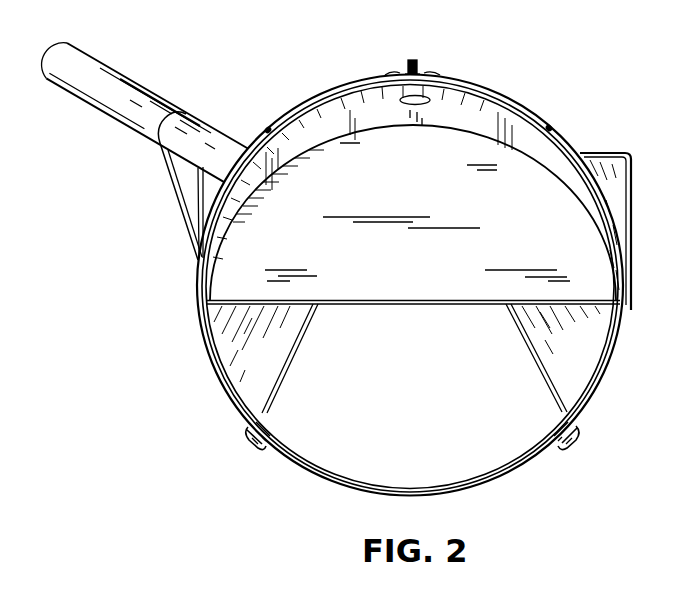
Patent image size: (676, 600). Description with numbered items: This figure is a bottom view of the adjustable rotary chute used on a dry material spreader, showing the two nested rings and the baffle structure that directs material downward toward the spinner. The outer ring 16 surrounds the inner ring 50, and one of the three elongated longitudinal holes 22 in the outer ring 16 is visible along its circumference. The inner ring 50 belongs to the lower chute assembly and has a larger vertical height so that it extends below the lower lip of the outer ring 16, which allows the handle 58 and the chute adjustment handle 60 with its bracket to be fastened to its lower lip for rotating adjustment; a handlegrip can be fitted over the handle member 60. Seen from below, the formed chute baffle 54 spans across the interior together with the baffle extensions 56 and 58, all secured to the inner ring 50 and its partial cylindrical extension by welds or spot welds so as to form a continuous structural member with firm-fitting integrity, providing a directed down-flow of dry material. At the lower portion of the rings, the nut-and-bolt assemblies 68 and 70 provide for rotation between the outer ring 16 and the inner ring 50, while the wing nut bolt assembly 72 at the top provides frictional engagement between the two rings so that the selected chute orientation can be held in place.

The outer ring 16 is at (318, 470).
The elongated longitudinal hole 22 is at (363, 80).
The inner ring 50 is at (395, 483).
The chute baffle 54 is at (413, 193).
The baffle extension 56 is at (413, 357).
The baffle extension 58 is at (321, 227).
The chute adjustment handle 60 is at (174, 187).
The nut-and-bolt assembly 68 is at (258, 447).
The nut-and-bolt assembly 70 is at (567, 446).
The wing nut bolt assembly 72 is at (422, 65).